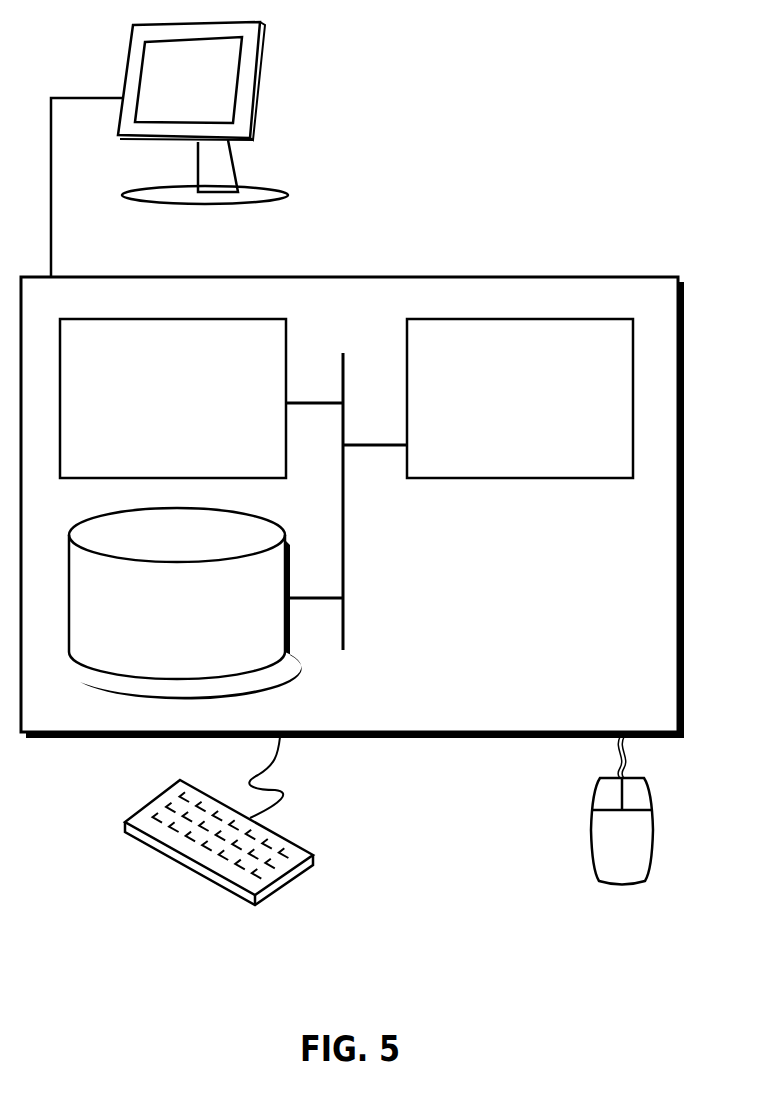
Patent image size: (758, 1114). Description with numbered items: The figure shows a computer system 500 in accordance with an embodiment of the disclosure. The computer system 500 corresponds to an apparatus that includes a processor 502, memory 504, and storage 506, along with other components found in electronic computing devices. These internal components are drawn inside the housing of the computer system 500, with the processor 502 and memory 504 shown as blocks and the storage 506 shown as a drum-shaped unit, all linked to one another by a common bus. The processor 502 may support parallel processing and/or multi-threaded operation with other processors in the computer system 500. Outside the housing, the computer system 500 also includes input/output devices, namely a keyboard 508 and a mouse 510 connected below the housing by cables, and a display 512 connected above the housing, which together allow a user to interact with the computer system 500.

The computer system 500 is at (397, 257).
The processor 502 is at (501, 411).
The memory 504 is at (151, 411).
The storage 506 is at (158, 623).
The keyboard 508 is at (142, 840).
The mouse 510 is at (598, 855).
The display 512 is at (169, 149).